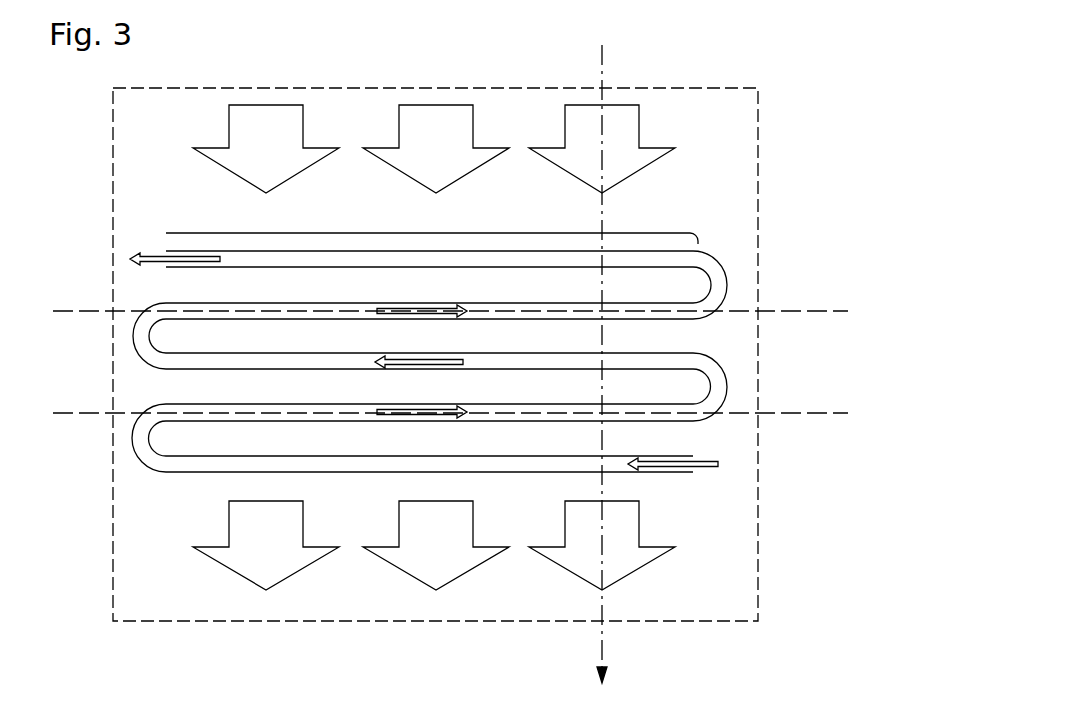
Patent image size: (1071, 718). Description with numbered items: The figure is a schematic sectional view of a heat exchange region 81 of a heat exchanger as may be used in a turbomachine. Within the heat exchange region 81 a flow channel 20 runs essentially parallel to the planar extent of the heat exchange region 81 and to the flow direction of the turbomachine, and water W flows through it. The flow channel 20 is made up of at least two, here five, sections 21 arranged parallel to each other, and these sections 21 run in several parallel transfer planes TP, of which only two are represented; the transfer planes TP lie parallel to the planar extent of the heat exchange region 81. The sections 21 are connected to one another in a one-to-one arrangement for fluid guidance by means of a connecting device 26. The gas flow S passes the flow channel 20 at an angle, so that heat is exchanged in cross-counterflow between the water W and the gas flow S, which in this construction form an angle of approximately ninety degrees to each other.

The flow channel 20 is at (185, 463).
The section 21 is at (442, 233).
The connecting device 26 is at (725, 278).
The heat exchange region 81 is at (688, 103).
The gas flow S is at (587, 118).
The water W is at (182, 262).
The transfer plane TP is at (63, 310).